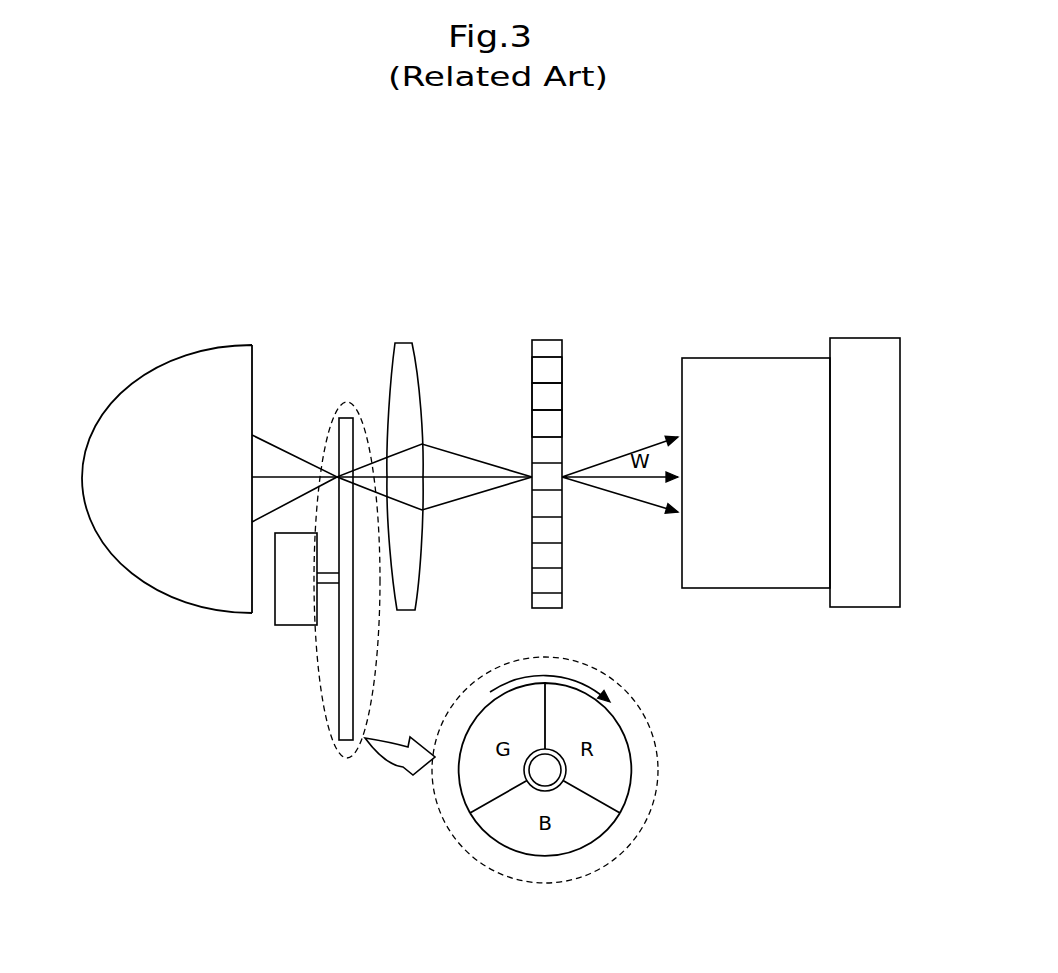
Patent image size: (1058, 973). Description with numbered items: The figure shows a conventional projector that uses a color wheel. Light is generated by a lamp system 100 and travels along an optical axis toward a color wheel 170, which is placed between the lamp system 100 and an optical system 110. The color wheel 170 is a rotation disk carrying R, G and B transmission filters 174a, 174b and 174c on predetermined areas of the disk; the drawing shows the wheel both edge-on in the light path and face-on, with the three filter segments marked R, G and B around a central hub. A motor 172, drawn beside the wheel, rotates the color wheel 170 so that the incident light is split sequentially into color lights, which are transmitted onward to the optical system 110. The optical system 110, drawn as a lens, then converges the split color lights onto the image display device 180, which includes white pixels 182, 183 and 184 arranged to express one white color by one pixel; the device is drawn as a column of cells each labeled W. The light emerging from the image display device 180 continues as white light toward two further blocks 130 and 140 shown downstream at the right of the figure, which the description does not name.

The lamp system 100 is at (190, 350).
The optical system 110 is at (405, 343).
The display panel 130 is at (750, 358).
The projection unit 140 is at (865, 338).
The color wheel 170 is at (353, 666).
The motor 172 is at (275, 615).
The R transmission filter 174a is at (628, 744).
The G transmission filter 174b is at (470, 786).
The B transmission filter 174c is at (550, 862).
The image display device 180 is at (545, 330).
The white pixel 182 is at (560, 372).
The white pixel 183 is at (562, 398).
The white pixel 184 is at (562, 422).